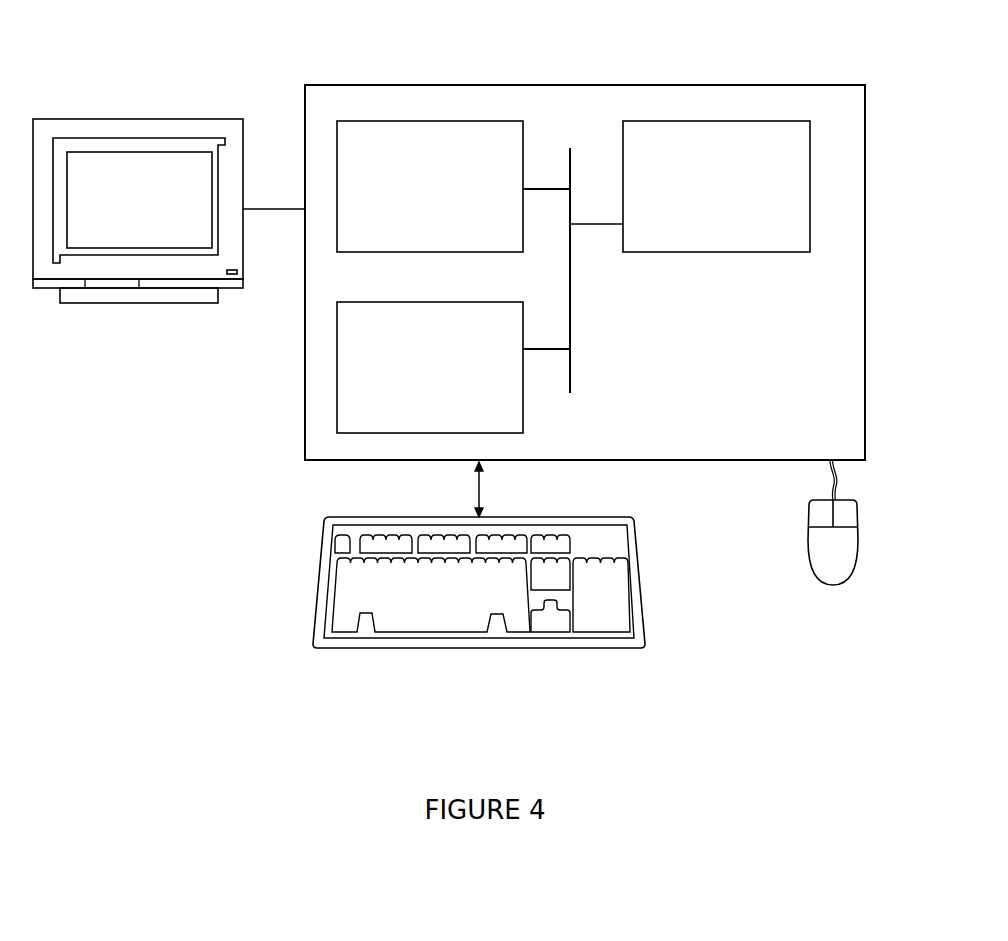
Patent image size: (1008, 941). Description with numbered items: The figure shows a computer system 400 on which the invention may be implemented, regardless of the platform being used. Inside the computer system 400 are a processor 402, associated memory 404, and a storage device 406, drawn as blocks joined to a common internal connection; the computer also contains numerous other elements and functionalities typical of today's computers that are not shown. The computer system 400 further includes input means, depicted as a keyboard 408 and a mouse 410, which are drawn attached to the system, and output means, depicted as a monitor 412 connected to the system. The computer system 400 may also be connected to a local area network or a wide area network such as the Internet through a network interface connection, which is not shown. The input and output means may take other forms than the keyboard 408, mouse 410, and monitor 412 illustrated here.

The computer system 400 is at (618, 41).
The processor 402 is at (688, 196).
The memory 404 is at (412, 196).
The storage device 406 is at (412, 378).
The keyboard 408 is at (409, 606).
The mouse 410 is at (815, 560).
The monitor 412 is at (118, 216).